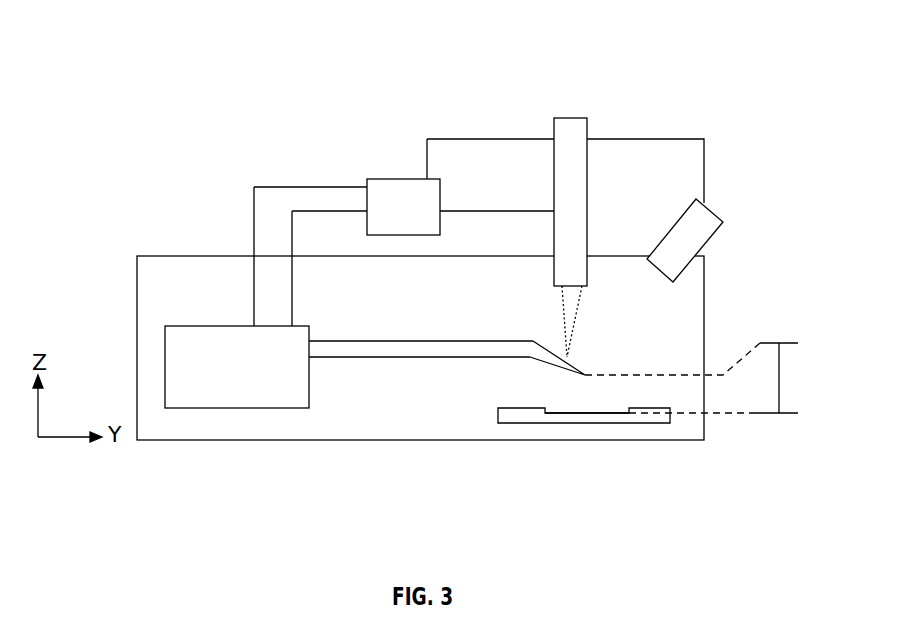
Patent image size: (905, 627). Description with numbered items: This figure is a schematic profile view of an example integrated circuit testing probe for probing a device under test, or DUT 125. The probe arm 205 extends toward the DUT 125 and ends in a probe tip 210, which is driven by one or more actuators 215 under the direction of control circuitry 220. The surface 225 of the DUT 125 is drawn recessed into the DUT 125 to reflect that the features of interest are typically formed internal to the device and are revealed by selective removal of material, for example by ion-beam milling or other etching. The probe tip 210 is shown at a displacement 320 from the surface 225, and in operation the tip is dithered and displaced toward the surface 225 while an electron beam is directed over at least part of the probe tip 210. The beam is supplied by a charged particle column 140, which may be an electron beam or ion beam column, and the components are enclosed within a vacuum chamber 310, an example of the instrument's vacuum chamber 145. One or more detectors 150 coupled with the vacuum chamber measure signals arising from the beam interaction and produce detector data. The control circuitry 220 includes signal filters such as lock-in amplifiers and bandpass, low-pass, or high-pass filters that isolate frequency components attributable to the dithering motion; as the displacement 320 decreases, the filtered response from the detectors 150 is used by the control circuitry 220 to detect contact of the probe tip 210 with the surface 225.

The DUT 125 is at (633, 423).
The charged particle column 140 is at (573, 118).
The vacuum chamber 145 is at (567, 357).
The detector 150 is at (710, 243).
The probe arm 205 is at (432, 341).
The probe tip 210 is at (583, 372).
The actuator 215 is at (185, 326).
The control circuitry 220 is at (400, 179).
The surface 225 is at (562, 404).
The vacuum chamber 310 is at (704, 283).
The displacement 320 is at (691, 378).